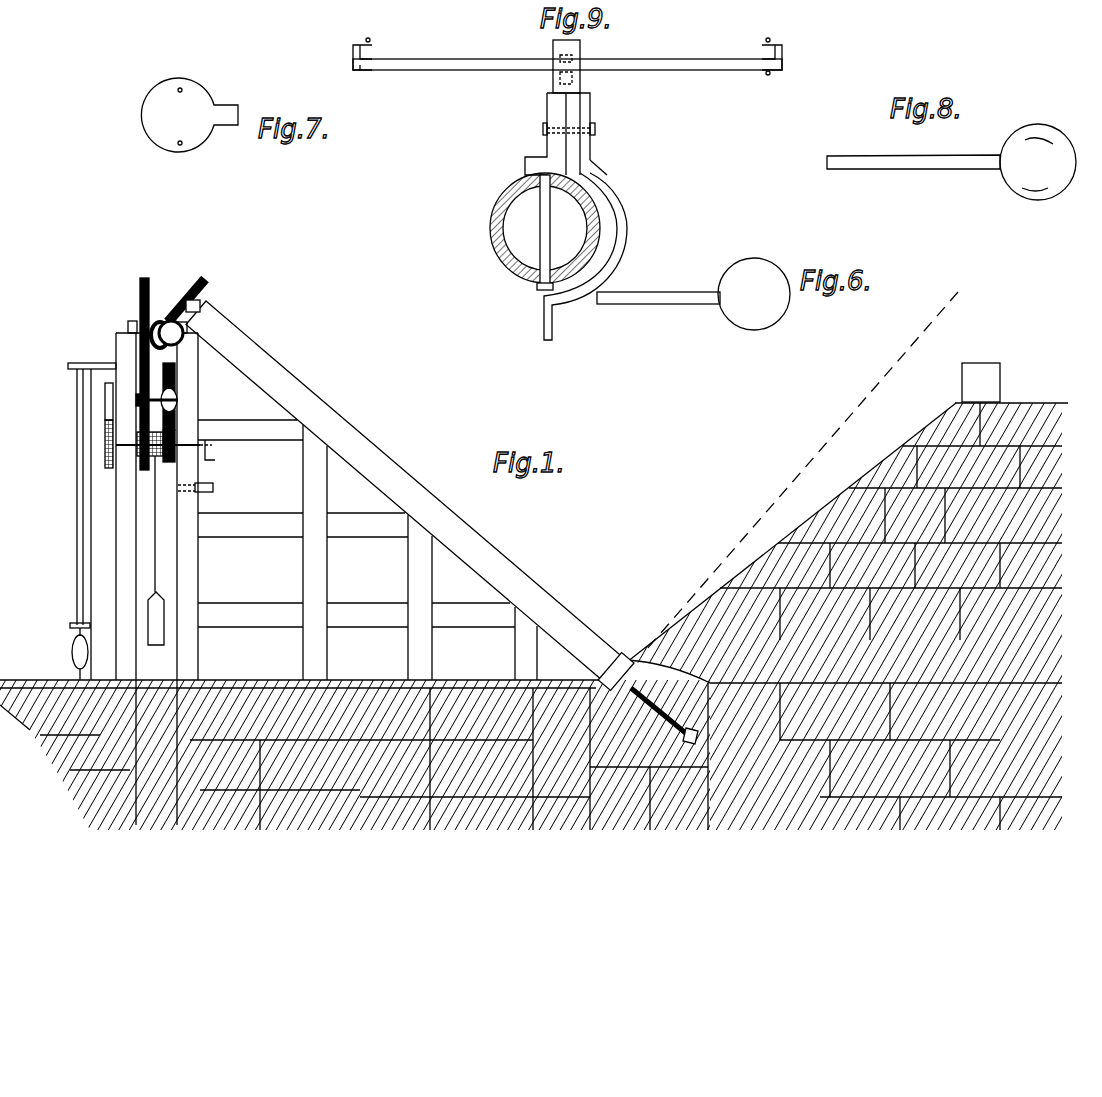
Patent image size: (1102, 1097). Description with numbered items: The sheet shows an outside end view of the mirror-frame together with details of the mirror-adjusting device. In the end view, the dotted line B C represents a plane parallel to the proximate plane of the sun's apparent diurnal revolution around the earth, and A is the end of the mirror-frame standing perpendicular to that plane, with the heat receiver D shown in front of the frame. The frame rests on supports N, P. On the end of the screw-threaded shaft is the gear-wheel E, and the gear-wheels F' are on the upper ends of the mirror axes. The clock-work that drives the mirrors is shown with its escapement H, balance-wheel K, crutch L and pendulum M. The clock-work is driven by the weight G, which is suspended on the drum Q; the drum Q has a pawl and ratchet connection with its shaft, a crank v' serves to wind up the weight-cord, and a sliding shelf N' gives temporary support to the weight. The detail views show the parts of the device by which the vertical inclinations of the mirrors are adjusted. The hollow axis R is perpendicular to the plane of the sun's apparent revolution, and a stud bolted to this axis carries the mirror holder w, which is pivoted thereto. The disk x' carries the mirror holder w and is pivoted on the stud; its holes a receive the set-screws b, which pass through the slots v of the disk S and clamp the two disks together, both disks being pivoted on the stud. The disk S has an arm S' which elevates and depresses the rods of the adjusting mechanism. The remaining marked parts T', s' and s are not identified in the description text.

In FIG. 1, the end of the mirror-frame A is at (406, 492).
In FIG. 1, the dotted line end point B is at (648, 686).
In FIG. 1, the dotted line end point C is at (809, 462).
In FIG. 1, the heat receiver D is at (1011, 383).
In FIG. 1, the gear-wheel E is at (157, 374).
In FIG. 1, the gear-wheels F' is at (192, 302).
In FIG. 1, the weight G is at (156, 550).
In FIG. 1, the escapement H is at (105, 400).
In FIG. 1, the balance-wheel K is at (108, 452).
In FIG. 1, the crutch L is at (85, 575).
In FIG. 1, the pendulum M is at (72, 650).
In FIG. 1, the support of the mirror-frame N is at (157, 579).
In FIG. 1, the sliding shelf N' is at (205, 489).
In FIG. 1, the support of the mirror-frame P is at (187, 579).
In FIG. 1, the drum Q is at (158, 446).
In FIG. 1, the holes a is at (96, 524).
In FIG. 7, the holes a is at (185, 116).
In FIG. 1, the crank v' is at (214, 452).
In FIG. 9, the mirror holder w is at (567, 56).
In FIG. 9, the head block T' is at (560, 107).
In FIG. 6, the head block T' is at (693, 294).
In FIG. 9, the disk S is at (586, 106).
In FIG. 9, the set-screws b is at (593, 102).
In FIG. 9, the arm S' is at (598, 256).
In FIG. 9, the hollow axis R is at (545, 230).
In FIG. 7, the disk x' is at (189, 115).
In FIG. 8, the handle s' is at (913, 155).
In FIG. 8, the knob s is at (1038, 162).
In FIG. 8, the slots v is at (1042, 164).